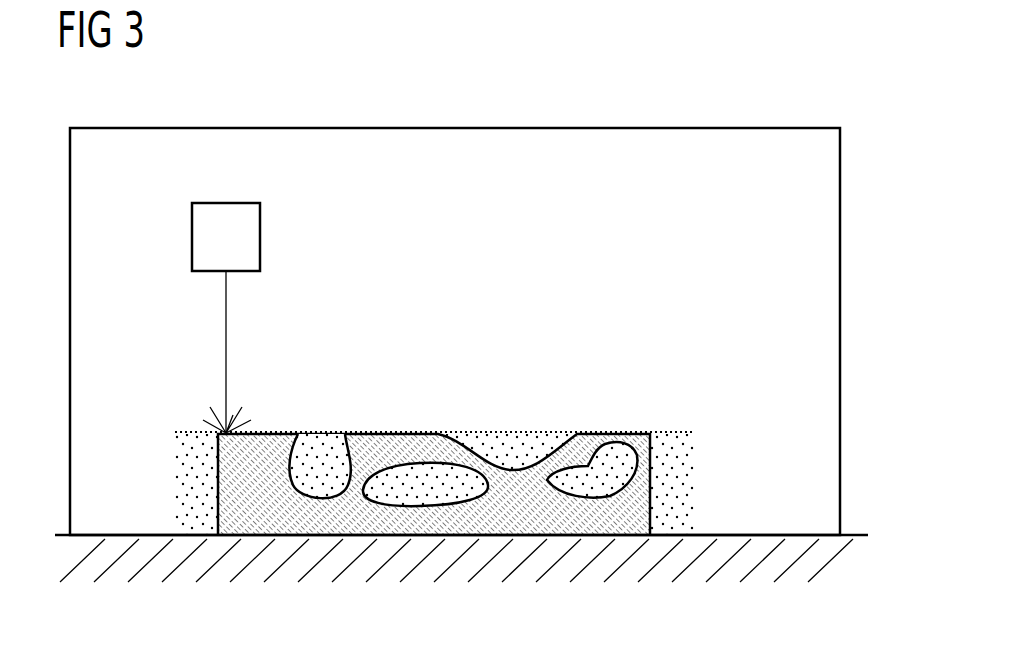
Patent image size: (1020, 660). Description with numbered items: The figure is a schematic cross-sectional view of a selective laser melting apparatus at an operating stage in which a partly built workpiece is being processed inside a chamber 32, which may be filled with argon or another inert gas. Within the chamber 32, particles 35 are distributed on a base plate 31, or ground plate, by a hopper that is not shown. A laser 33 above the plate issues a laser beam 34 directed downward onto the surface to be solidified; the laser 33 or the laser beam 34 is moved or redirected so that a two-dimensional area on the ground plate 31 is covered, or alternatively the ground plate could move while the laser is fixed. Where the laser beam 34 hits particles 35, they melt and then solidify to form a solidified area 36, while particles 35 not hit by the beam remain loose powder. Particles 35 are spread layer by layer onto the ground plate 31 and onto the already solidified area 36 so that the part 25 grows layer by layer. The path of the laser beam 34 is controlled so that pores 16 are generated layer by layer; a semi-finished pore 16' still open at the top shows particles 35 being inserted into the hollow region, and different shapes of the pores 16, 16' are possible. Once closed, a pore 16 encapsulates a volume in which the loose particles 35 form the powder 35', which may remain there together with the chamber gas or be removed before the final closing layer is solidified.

The pore 16 is at (500, 535).
The semi-finished pore 16' is at (433, 438).
The part 25 is at (516, 490).
The base plate 31 is at (700, 563).
The chamber 32 is at (708, 142).
The laser 33 is at (248, 243).
The laser beam 34 is at (226, 333).
The particles 35 is at (460, 483).
The powder 35' is at (500, 505).
The solidified area 36 is at (278, 505).